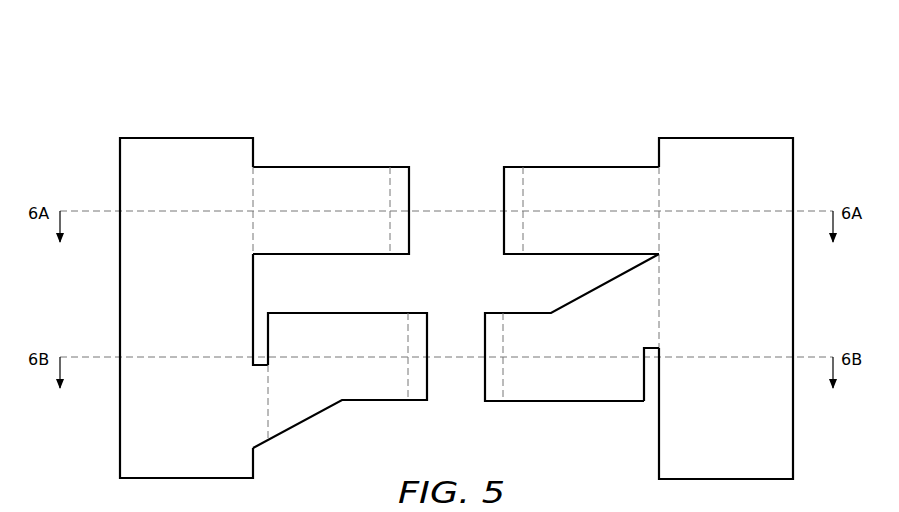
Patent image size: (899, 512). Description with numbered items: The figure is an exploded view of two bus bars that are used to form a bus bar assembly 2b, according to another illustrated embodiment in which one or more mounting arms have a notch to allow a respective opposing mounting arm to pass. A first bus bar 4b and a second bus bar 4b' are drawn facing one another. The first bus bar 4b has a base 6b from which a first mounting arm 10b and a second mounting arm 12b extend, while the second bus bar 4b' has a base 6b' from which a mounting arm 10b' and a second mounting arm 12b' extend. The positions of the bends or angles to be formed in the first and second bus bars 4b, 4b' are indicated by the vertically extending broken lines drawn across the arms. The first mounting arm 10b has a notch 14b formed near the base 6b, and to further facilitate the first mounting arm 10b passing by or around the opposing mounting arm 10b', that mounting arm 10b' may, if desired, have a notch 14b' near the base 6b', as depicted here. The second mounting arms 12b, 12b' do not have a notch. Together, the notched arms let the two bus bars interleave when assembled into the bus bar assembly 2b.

The bus bar assembly 2b is at (455, 74).
The first bus bar 4b is at (668, 263).
The second bus bar 4b' is at (241, 265).
The base 6b is at (755, 308).
The base 6b' is at (157, 308).
The first mounting arm 10b is at (572, 364).
The mounting arm 10b' is at (248, 380).
The second mounting arm 12b is at (581, 222).
The second mounting arm 12b' is at (238, 210).
The notch 14b is at (738, 382).
The notch 14b' is at (161, 309).